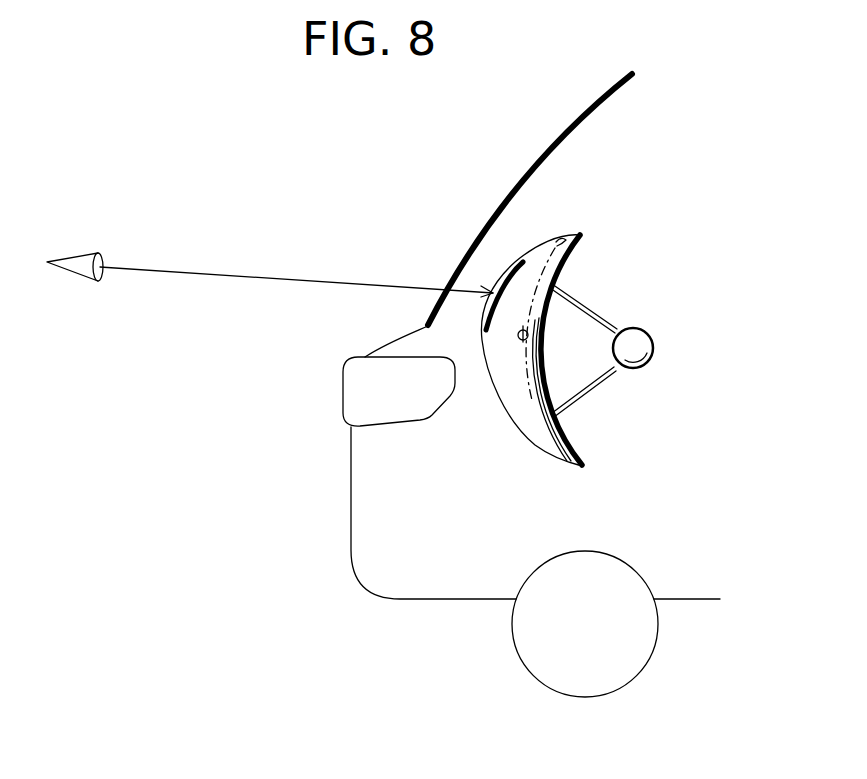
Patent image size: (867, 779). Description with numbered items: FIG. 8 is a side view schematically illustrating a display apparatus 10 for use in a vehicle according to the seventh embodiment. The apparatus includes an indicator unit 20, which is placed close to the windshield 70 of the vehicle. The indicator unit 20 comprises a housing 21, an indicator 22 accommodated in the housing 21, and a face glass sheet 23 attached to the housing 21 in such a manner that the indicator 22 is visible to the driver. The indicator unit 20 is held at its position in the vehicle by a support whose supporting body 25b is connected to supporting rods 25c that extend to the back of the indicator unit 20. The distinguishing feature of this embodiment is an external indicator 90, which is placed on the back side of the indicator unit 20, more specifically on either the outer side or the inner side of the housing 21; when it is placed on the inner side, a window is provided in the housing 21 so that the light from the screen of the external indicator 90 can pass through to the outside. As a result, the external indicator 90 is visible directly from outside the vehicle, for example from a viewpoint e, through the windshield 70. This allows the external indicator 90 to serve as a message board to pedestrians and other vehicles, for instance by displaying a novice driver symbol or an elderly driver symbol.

The viewpoint e is at (77, 252).
The display apparatus 10 is at (632, 222).
The indicator unit 20 is at (506, 345).
The housing 21 is at (500, 413).
The indicator 22 is at (557, 222).
The face glass sheet 23 is at (555, 462).
The supporting body 25b is at (633, 327).
The supporting rods 25c is at (570, 300).
The windshield 70 is at (465, 254).
The external indicator 90 is at (508, 273).